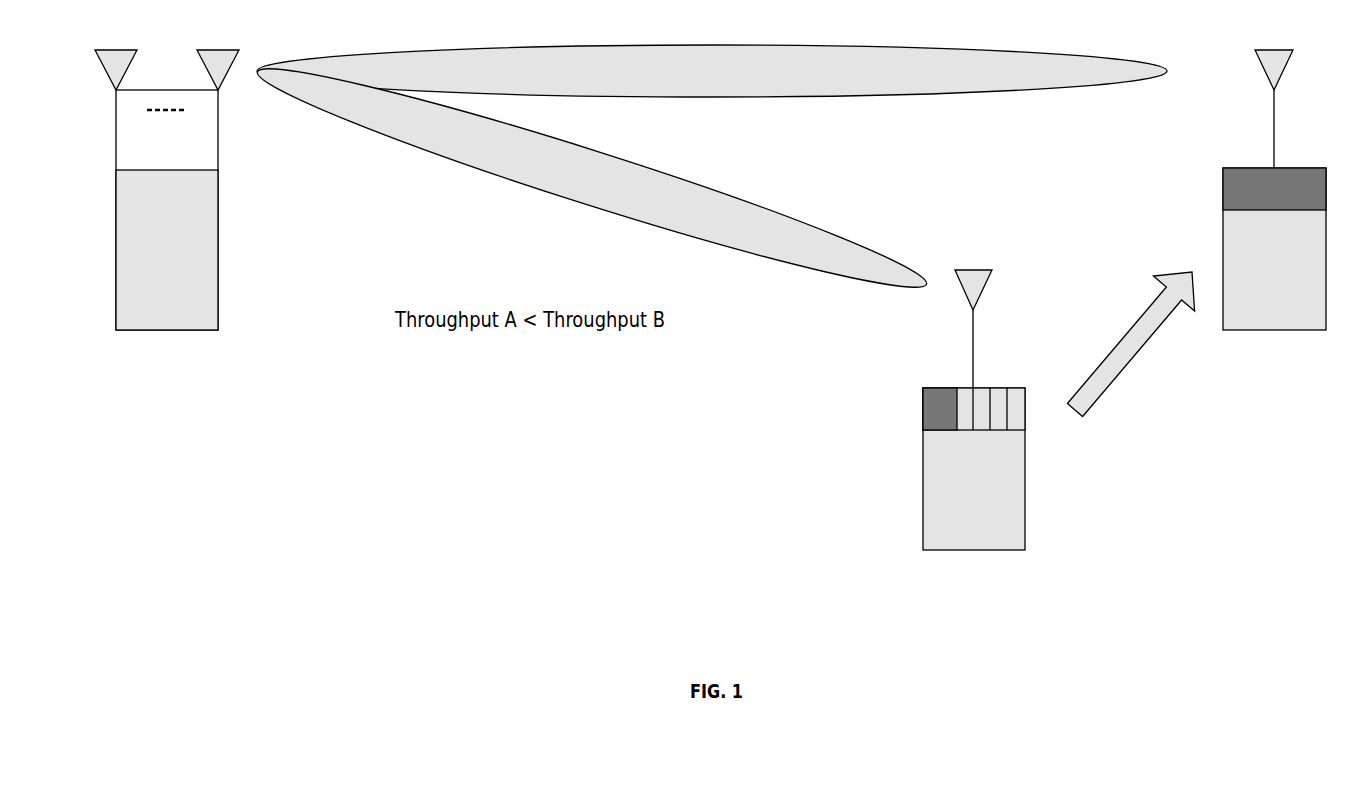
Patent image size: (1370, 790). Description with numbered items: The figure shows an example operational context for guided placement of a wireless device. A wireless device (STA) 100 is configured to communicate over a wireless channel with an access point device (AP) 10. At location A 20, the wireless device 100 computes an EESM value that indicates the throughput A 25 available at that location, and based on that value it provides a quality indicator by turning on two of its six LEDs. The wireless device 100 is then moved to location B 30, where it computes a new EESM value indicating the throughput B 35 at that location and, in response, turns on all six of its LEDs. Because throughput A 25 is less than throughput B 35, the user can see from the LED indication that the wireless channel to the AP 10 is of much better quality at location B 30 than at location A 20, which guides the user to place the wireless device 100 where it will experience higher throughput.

The access point device 10 is at (158, 263).
The location A 20 is at (964, 483).
The throughput A 25 is at (534, 176).
The location B 30 is at (1264, 265).
The throughput B 35 is at (656, 81).
The wireless device 100 is at (1126, 321).